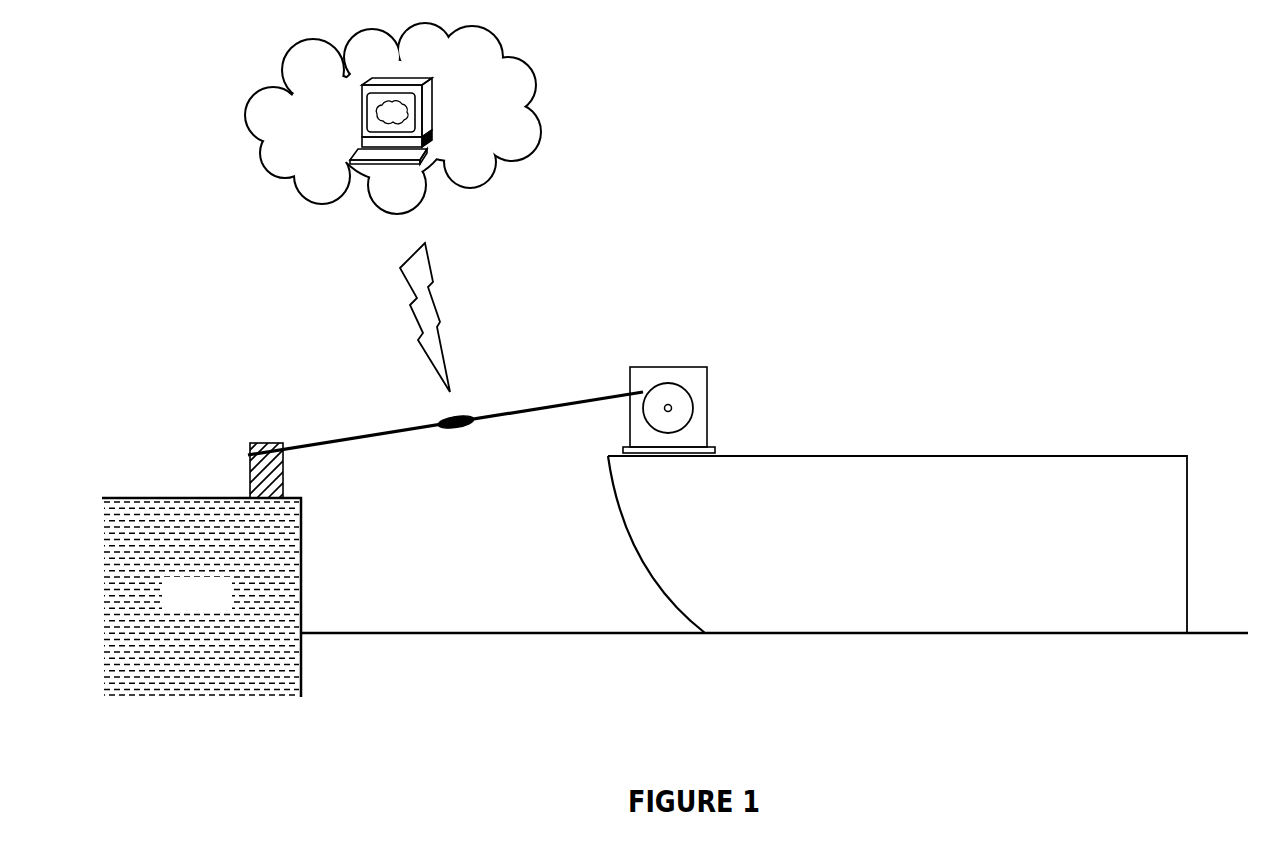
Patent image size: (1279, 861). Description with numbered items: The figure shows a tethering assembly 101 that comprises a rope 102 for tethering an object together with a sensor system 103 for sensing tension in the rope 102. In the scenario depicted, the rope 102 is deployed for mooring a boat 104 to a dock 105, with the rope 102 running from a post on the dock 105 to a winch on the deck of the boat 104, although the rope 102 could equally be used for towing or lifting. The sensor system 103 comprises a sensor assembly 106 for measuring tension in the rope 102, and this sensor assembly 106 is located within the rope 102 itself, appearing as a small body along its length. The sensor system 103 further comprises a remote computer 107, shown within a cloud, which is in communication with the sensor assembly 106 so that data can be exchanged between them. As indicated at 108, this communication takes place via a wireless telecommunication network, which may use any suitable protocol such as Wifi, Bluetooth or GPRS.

The tethering assembly 101 is at (667, 360).
The rope 102 is at (570, 400).
The sensor system 103 is at (215, 219).
The boat 104 is at (937, 557).
The dock 105 is at (221, 605).
The sensor assembly 106 is at (436, 409).
The remote computer 107 is at (494, 111).
The wireless telecommunication network 108 is at (422, 273).